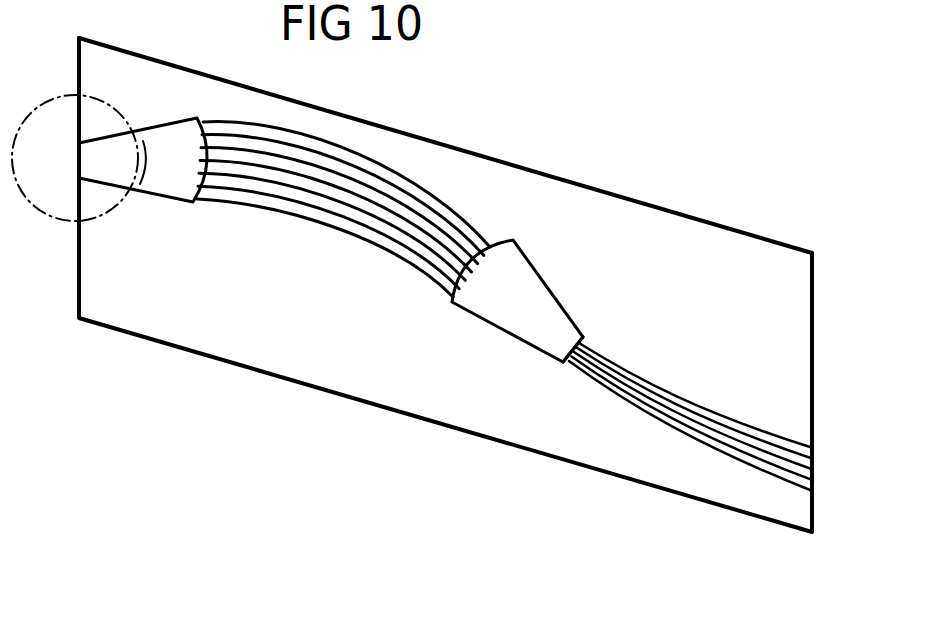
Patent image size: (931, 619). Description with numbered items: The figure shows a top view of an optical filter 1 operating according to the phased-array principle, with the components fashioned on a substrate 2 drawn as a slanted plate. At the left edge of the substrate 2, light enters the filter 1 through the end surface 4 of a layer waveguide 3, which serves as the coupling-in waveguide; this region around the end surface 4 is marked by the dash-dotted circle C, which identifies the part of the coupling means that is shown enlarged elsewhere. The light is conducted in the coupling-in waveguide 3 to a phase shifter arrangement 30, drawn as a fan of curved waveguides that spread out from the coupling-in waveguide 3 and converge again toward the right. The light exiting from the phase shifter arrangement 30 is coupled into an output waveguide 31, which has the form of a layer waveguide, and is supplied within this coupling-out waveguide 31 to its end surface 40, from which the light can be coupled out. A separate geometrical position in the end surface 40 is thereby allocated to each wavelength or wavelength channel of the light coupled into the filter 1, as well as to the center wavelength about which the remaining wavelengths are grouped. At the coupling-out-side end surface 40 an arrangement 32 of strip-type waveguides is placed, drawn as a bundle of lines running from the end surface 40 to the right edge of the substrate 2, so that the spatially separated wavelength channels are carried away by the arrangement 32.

The optical filter 1 is at (604, 150).
The substrate 2 is at (669, 240).
The layer waveguide 3 is at (173, 185).
The end surface 4 is at (76, 158).
The circle C is at (63, 95).
The phase shifter arrangement 30 is at (463, 175).
The output waveguide 31 is at (533, 290).
The arrangement of strip-type waveguides 32 is at (713, 404).
The end surface 40 is at (568, 364).